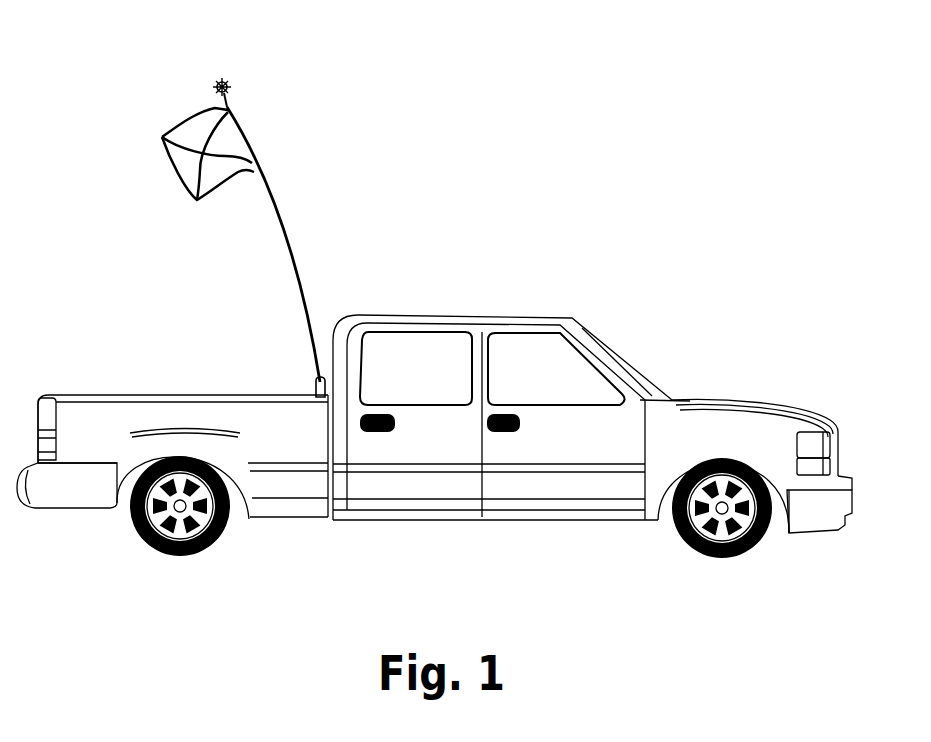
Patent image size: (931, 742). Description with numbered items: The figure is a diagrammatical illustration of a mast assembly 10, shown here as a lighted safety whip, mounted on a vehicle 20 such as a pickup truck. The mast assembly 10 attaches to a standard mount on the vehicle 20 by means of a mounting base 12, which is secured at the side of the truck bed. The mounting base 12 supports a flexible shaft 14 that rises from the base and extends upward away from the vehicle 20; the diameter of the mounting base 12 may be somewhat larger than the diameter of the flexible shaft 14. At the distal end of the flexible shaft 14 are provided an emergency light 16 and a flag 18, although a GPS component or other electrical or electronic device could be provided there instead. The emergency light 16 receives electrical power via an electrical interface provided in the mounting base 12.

The mast assembly 10 is at (423, 100).
The mounting base 12 is at (316, 383).
The flexible shaft 14 is at (275, 192).
The emergency light 16 is at (228, 75).
The flag 18 is at (172, 131).
The vehicle 20 is at (578, 323).